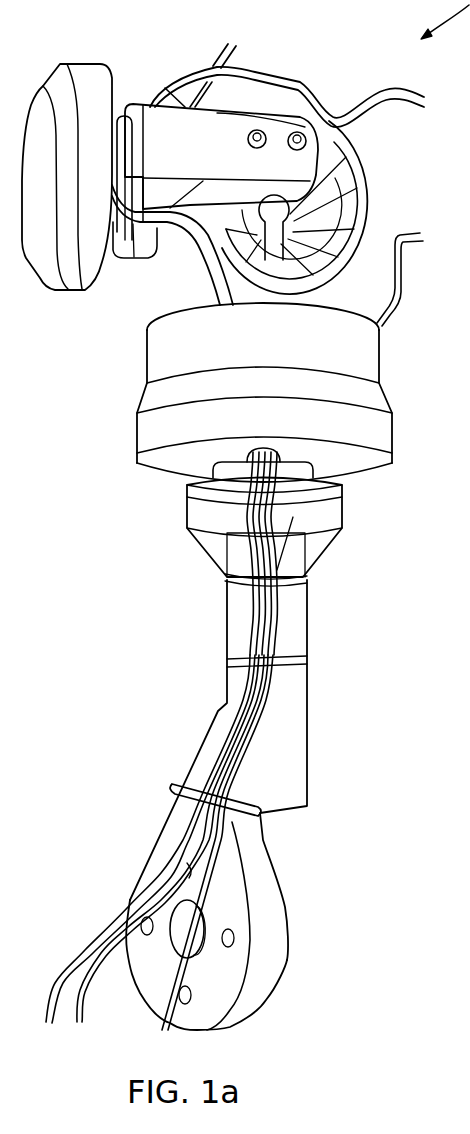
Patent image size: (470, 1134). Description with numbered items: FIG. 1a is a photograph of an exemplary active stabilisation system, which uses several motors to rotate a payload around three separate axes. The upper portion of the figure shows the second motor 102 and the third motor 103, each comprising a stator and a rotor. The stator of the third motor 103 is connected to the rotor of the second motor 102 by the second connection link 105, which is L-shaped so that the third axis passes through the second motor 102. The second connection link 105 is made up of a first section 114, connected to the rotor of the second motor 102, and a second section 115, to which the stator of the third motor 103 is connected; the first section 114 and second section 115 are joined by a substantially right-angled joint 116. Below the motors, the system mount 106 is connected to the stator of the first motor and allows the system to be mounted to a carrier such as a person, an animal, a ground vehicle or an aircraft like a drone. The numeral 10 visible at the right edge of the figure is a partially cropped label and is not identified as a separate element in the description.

The base unit / housing 10 is at (401, 430).
The second motor 102 is at (381, 169).
The third motor 103 is at (86, 62).
The second connection link 105 is at (211, 126).
The system mount 106 is at (293, 562).
The first section 114 is at (287, 125).
The second section 115 is at (143, 248).
The right-angled joint 116 is at (155, 124).